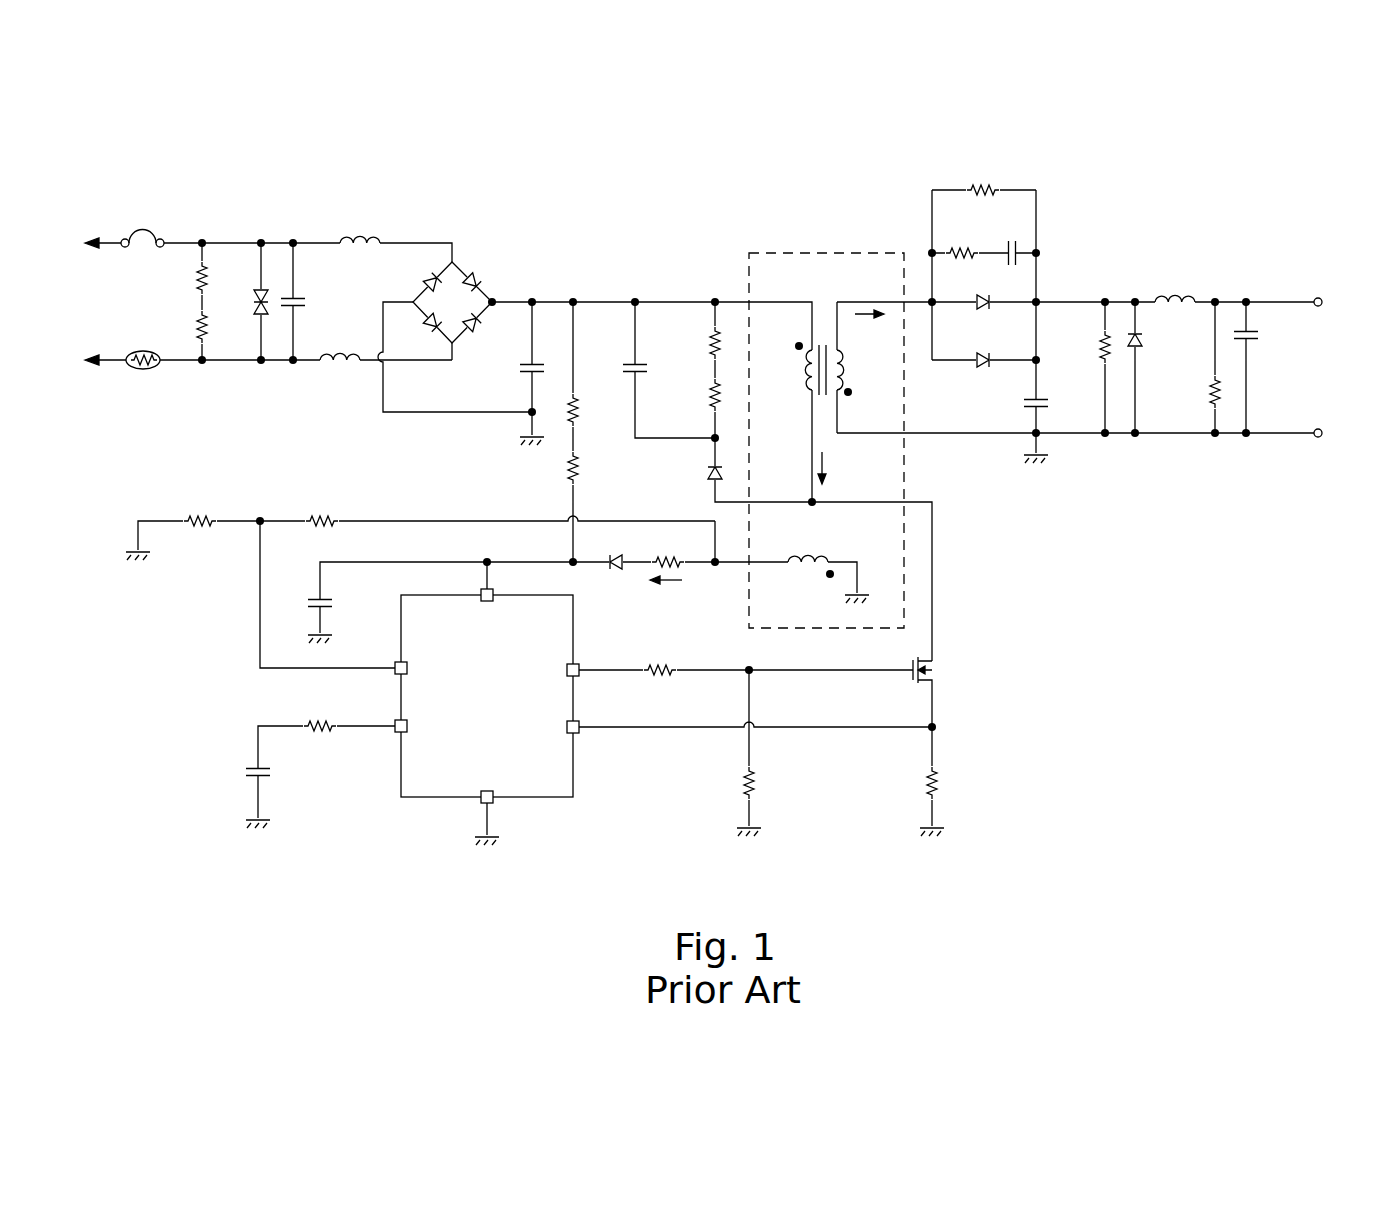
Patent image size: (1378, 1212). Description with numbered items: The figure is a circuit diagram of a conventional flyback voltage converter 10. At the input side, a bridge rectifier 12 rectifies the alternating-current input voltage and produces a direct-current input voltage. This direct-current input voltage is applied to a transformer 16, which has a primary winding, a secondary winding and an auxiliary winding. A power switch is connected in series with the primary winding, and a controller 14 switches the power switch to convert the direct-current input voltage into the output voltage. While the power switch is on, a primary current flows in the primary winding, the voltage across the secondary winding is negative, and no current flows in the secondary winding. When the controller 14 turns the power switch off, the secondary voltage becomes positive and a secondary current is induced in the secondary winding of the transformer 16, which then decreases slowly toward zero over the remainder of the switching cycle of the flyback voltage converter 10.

The flyback voltage converter 10 is at (720, 485).
The bridge rectifier 12 is at (475, 245).
The controller 14 is at (575, 768).
The transformer 16 is at (823, 252).